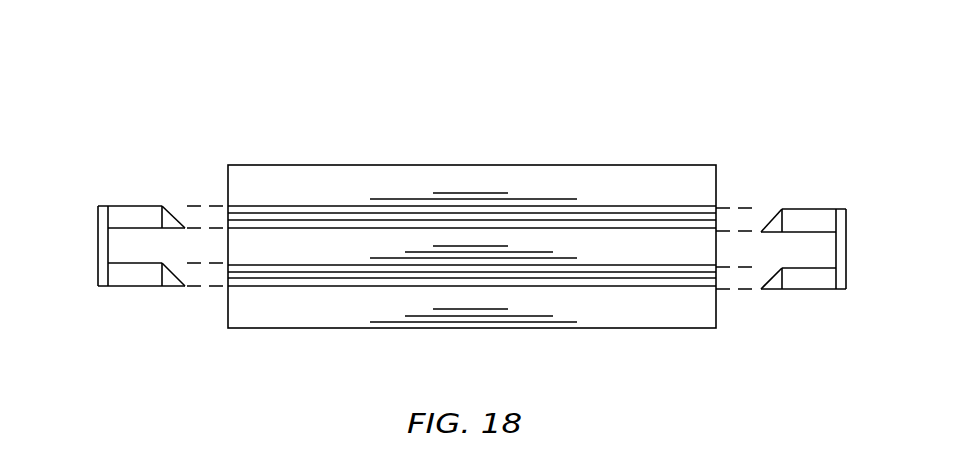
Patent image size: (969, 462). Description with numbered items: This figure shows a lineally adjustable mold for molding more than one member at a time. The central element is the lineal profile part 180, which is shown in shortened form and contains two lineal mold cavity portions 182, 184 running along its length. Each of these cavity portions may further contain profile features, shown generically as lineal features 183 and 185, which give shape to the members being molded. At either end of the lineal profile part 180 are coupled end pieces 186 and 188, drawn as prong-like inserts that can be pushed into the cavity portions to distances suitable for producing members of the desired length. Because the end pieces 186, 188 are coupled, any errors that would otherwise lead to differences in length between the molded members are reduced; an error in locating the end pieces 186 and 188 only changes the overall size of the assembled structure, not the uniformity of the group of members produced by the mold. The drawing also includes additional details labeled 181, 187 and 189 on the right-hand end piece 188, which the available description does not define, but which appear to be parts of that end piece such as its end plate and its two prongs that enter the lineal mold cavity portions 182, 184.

The lineal profile part 180 is at (637, 150).
The end plate 181 is at (846, 276).
The lineal mold cavity portion 182 is at (598, 205).
The lineal feature 183 is at (330, 215).
The lineal mold cavity portion 184 is at (332, 280).
The lineal feature 185 is at (598, 288).
The coupled end piece 186 is at (118, 195).
The upper prong 187 is at (810, 215).
The coupled end piece 188 is at (788, 242).
The lower prong 189 is at (810, 283).